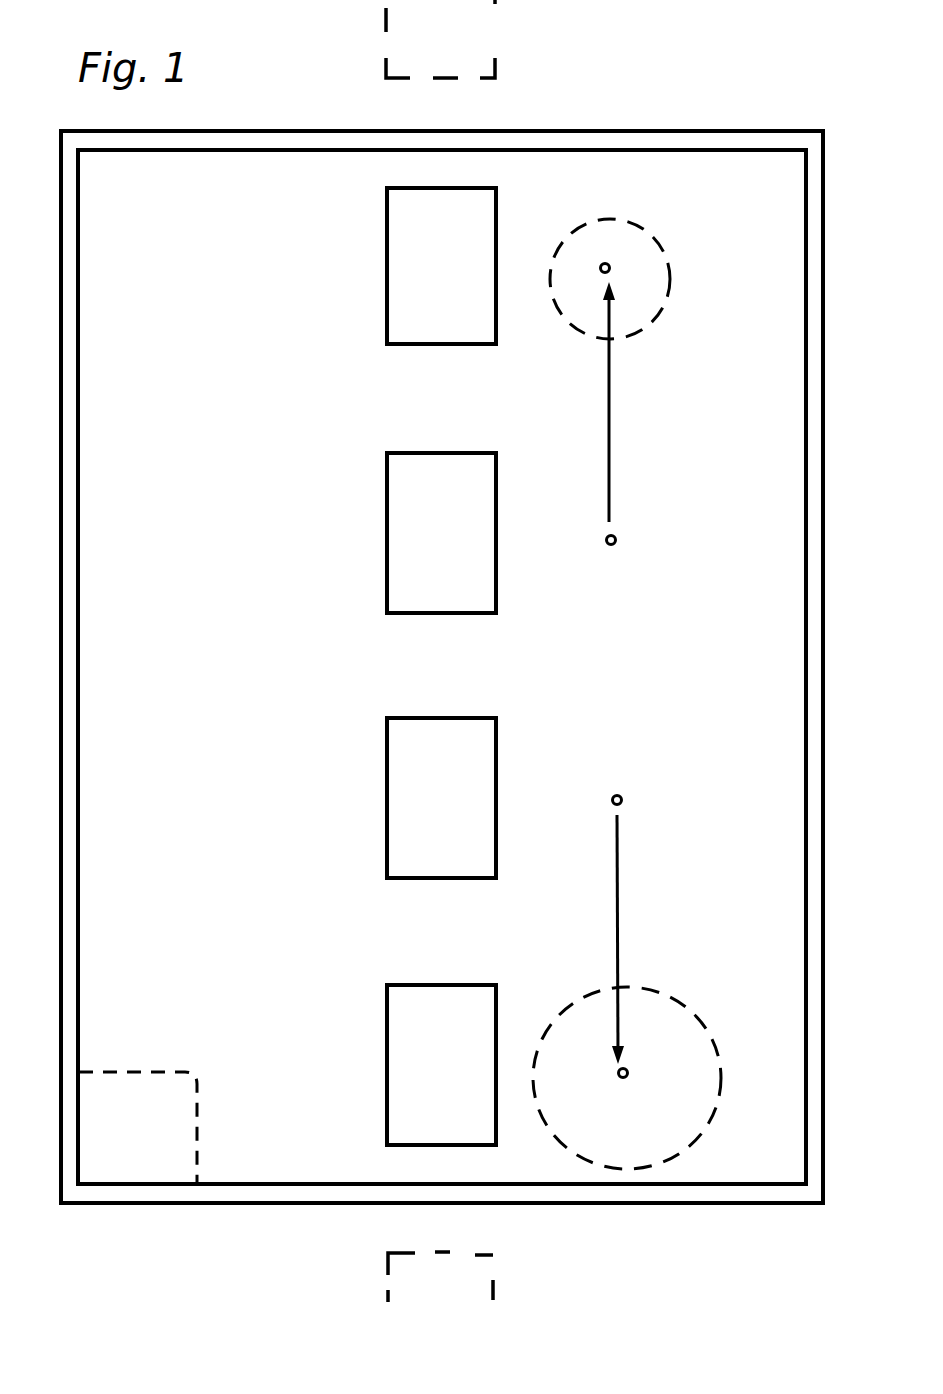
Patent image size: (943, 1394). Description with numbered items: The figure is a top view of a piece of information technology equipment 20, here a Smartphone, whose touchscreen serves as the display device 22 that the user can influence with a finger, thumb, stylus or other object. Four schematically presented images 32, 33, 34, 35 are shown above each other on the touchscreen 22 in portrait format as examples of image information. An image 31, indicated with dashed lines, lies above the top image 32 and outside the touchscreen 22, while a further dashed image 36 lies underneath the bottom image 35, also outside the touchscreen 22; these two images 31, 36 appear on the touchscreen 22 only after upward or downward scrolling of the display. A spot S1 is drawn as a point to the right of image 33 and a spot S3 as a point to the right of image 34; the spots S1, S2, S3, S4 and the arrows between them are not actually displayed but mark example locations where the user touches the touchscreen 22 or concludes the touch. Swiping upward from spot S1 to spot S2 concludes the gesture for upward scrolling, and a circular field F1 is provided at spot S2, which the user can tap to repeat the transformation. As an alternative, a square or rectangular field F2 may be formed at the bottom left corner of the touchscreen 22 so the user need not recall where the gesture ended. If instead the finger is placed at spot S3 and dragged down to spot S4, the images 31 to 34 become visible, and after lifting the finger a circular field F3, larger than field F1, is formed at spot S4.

The information technology equipment 20 is at (258, 138).
The display device 22 is at (557, 172).
The image 31 is at (492, 34).
The image 32 is at (496, 210).
The image 33 is at (496, 480).
The image 34 is at (496, 746).
The image 35 is at (496, 1014).
The image 36 is at (493, 1255).
The spot S1 is at (616, 540).
The spot S2 is at (610, 268).
The spot S3 is at (622, 800).
The spot S4 is at (628, 1070).
The field F1 is at (645, 232).
The field F2 is at (161, 1160).
The field F3 is at (688, 1010).